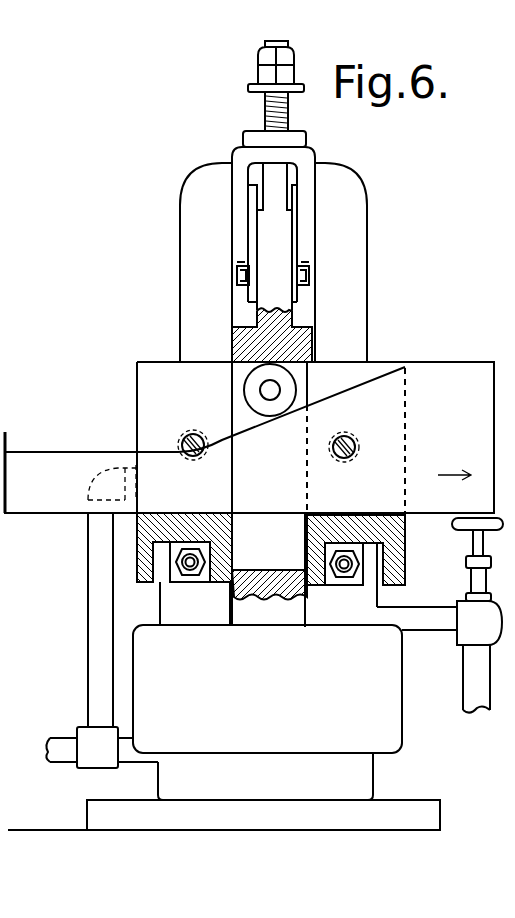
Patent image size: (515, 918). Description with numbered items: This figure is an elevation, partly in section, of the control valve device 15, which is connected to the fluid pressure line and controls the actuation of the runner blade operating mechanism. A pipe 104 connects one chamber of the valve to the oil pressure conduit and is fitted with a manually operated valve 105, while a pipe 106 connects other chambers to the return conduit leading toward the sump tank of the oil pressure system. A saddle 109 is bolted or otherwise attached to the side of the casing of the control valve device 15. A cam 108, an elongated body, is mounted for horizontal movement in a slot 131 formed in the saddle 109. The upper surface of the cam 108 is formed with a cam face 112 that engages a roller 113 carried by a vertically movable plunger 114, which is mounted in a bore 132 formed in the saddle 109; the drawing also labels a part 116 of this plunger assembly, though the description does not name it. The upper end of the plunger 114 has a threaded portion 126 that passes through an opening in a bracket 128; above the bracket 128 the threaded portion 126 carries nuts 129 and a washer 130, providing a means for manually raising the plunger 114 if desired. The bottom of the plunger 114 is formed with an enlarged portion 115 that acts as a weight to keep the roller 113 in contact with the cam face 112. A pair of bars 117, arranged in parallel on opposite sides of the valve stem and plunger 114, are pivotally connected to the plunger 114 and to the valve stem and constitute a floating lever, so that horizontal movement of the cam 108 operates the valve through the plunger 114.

The control valve device 15 is at (377, 801).
The pipe 104 is at (468, 683).
The manually operated valve 105 is at (477, 553).
The pipe 106 is at (63, 743).
The cam 108 is at (249, 437).
The saddle 109 is at (137, 545).
The cam face 112 is at (250, 432).
The roller 113 is at (290, 379).
The plunger 114 is at (308, 338).
The enlarged portion 115 is at (267, 689).
The piston rod 116 is at (242, 372).
The bars 117 is at (246, 265).
The threaded portion 126 is at (266, 119).
The bracket 128 is at (305, 160).
The nuts 129 is at (258, 63).
The washer 130 is at (248, 88).
The slot 131 is at (137, 517).
The bore 132 is at (228, 558).